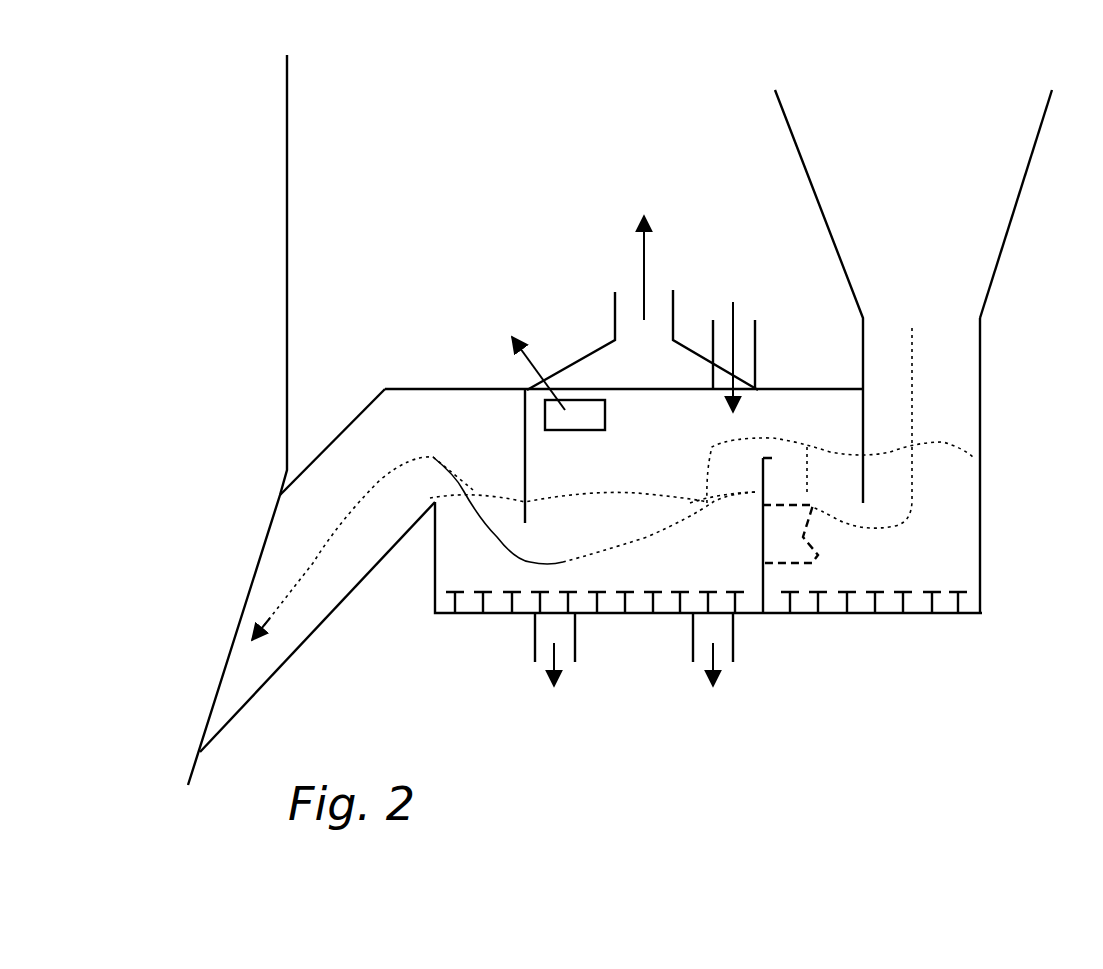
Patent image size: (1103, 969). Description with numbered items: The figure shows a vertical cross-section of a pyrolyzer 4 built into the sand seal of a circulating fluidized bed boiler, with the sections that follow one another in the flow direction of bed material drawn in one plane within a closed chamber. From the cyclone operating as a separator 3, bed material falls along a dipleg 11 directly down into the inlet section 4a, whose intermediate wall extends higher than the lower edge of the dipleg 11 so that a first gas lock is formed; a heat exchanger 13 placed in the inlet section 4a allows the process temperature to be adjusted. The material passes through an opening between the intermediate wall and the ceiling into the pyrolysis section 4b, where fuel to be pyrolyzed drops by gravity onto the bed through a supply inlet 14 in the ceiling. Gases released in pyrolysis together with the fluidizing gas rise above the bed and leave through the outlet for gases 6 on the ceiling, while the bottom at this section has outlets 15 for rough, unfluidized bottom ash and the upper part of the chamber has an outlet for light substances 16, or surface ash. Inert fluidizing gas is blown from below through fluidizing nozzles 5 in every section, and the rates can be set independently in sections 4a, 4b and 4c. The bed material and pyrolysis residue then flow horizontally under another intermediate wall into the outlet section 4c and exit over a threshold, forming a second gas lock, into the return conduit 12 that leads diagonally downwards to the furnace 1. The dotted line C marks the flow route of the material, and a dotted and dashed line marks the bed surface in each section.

The furnace 1 is at (287, 133).
The separator 3 is at (1043, 120).
The pyrolyzer 4 is at (424, 577).
The inlet section 4a is at (903, 584).
The pyrolysis section 4b is at (610, 542).
The outlet section 4c is at (476, 556).
The fluidizing nozzles 5 is at (933, 592).
The outlet for gases 6 is at (615, 323).
The dipleg 11 is at (963, 372).
The return conduit 12 is at (335, 438).
The heat exchanger 13 is at (783, 505).
The supply inlet 14 is at (755, 350).
The outlets 15 is at (535, 644).
The outlet for light substances 16 is at (545, 417).
The circulation of bed material C is at (318, 562).